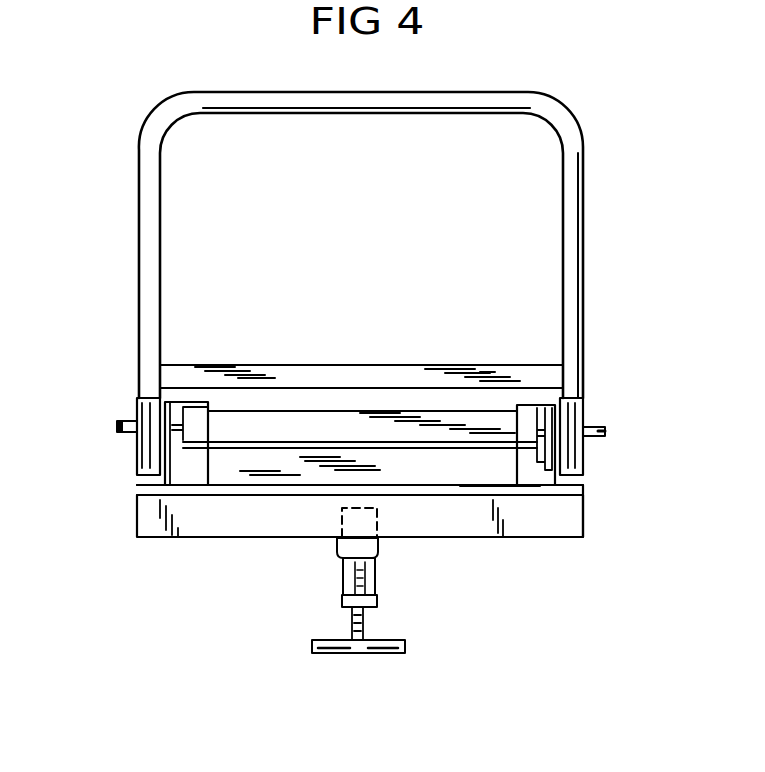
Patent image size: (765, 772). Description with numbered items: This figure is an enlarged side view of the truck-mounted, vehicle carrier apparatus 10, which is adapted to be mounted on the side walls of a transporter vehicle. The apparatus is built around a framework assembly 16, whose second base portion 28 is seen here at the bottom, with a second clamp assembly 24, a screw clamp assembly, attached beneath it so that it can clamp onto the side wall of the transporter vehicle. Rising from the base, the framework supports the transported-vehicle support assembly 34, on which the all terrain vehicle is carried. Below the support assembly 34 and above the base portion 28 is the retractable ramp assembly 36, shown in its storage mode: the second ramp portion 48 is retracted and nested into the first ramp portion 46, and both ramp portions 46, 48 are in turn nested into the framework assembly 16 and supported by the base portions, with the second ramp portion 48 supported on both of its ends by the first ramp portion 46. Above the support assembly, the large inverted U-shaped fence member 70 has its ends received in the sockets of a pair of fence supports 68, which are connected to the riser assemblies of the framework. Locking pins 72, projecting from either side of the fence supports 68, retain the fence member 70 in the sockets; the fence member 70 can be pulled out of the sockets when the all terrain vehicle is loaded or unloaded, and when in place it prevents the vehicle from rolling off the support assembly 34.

The truck-mounted, vehicle carrier apparatus 10 is at (120, 112).
The framework assembly 16 is at (602, 491).
The second clamp assembly 24 is at (306, 586).
The second base portion 28 is at (143, 512).
The transported-vehicle support assembly 34 is at (371, 362).
The retractable ramp assembly 36 is at (512, 394).
The first ramp portion 46 is at (495, 472).
The second ramp portion 48 is at (222, 424).
The fence supports 68 is at (147, 413).
The fence member 70 is at (508, 103).
The locking pins 72 is at (117, 433).